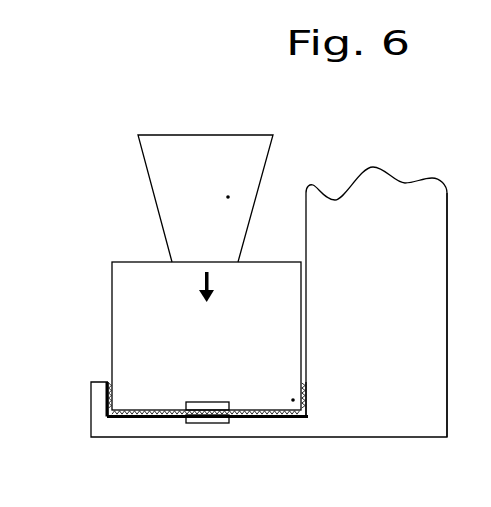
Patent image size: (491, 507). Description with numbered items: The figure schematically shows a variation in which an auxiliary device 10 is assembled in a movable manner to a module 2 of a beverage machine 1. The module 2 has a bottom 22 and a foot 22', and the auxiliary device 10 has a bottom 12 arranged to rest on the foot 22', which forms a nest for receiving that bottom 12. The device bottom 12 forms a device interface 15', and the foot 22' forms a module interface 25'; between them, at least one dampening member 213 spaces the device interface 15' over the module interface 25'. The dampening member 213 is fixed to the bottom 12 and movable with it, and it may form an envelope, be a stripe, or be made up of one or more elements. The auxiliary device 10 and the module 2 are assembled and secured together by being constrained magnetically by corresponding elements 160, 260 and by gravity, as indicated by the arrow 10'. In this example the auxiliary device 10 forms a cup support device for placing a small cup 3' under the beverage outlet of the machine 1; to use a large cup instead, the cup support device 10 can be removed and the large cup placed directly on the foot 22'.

The machine 1 is at (104, 84).
The module 2 is at (409, 163).
The small cup 3' is at (205, 198).
The auxiliary device 10 is at (185, 306).
The arrow 10' is at (168, 287).
The bottom 12 is at (271, 393).
The device interface 15' is at (207, 364).
The corresponding element 160 is at (208, 406).
The dampening member 213 is at (110, 382).
The bottom 22 is at (269, 345).
The foot 22' is at (97, 459).
The module interface 25' is at (266, 453).
The corresponding element 260 is at (206, 416).